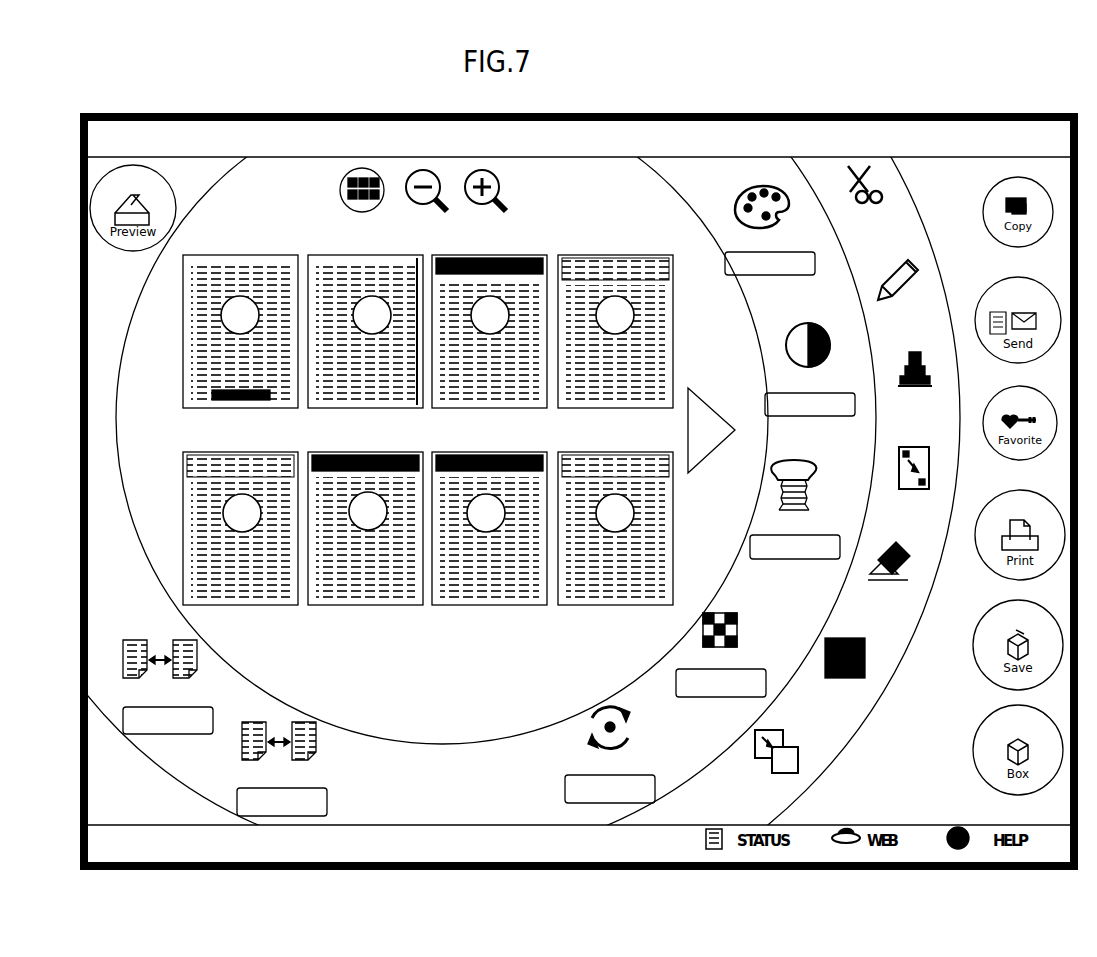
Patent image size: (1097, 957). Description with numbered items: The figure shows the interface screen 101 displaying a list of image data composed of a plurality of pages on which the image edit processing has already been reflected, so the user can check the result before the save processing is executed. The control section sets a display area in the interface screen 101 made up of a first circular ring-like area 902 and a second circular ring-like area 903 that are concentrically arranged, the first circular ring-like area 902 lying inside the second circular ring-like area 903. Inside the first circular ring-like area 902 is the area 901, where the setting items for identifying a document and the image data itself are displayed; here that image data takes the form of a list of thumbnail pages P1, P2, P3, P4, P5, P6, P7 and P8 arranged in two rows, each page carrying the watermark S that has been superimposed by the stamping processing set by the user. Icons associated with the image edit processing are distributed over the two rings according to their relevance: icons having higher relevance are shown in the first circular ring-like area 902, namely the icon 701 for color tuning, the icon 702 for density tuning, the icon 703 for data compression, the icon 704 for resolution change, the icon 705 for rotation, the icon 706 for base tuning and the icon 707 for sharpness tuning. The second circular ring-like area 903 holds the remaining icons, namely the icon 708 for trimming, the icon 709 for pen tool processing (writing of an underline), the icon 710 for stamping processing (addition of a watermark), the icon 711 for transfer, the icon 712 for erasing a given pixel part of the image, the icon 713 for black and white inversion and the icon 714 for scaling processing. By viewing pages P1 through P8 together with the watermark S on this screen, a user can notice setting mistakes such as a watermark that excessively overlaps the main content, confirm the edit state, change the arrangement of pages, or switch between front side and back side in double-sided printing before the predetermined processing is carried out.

The interface screen 101 is at (1012, 113).
The area 901 is at (570, 180).
The first circular ring-like area 902 is at (728, 170).
The second circular ring-like area 903 is at (848, 735).
The icon 701 is at (736, 214).
The icon 702 is at (783, 344).
The icon 703 is at (833, 498).
The icon 704 is at (750, 635).
The icon 705 is at (584, 746).
The icon 706 is at (328, 769).
The icon 707 is at (159, 634).
The icon 708 is at (890, 178).
The icon 709 is at (912, 279).
The icon 710 is at (929, 370).
The icon 711 is at (937, 465).
The icon 712 is at (914, 559).
The icon 713 is at (878, 654).
The icon 714 is at (776, 788).
The page 1 thumbnail P1 is at (257, 255).
The page 2 thumbnail P2 is at (393, 255).
The page 3 thumbnail P3 is at (535, 255).
The page 4 thumbnail P4 is at (628, 255).
The page 5 thumbnail P5 is at (285, 608).
The page 6 thumbnail P6 is at (400, 608).
The page 7 thumbnail P7 is at (530, 608).
The page 8 thumbnail P8 is at (588, 608).
The watermark S is at (221, 315).